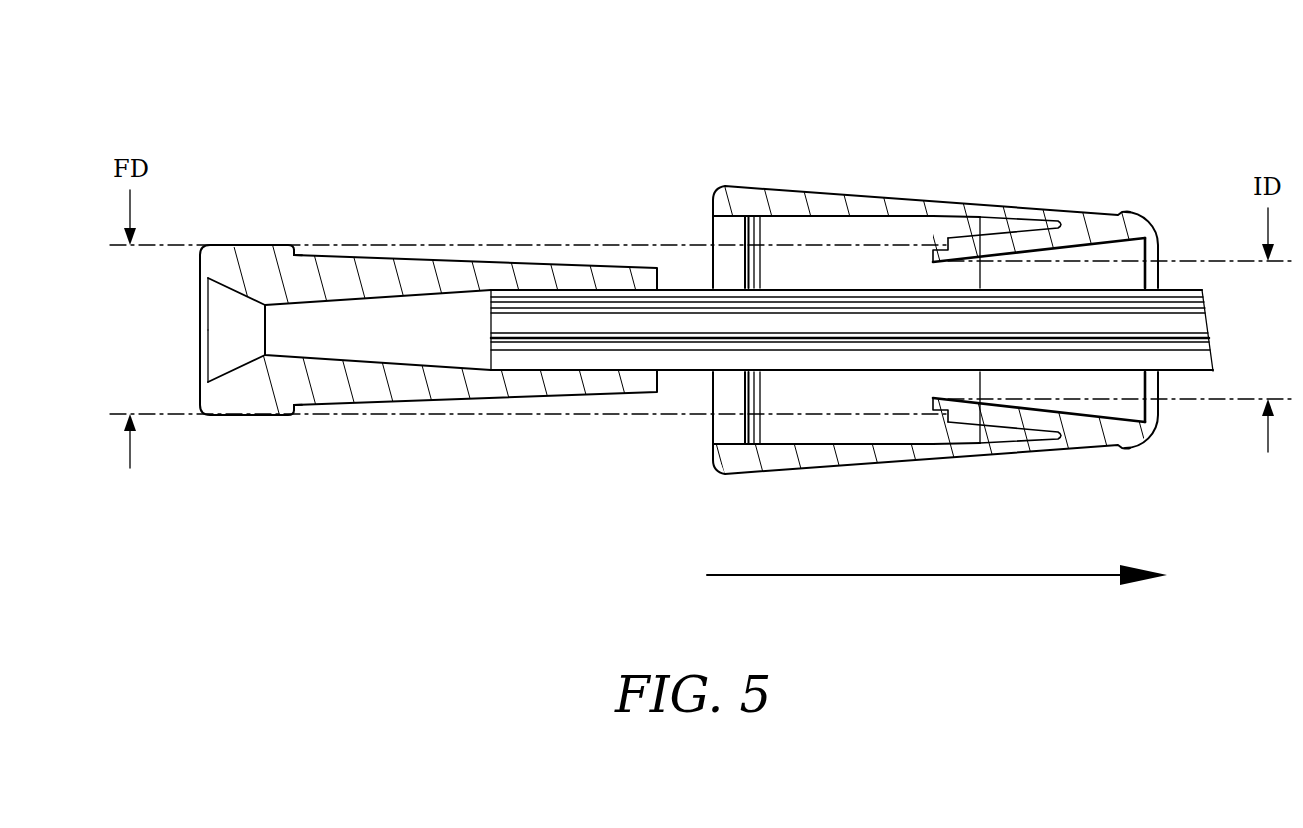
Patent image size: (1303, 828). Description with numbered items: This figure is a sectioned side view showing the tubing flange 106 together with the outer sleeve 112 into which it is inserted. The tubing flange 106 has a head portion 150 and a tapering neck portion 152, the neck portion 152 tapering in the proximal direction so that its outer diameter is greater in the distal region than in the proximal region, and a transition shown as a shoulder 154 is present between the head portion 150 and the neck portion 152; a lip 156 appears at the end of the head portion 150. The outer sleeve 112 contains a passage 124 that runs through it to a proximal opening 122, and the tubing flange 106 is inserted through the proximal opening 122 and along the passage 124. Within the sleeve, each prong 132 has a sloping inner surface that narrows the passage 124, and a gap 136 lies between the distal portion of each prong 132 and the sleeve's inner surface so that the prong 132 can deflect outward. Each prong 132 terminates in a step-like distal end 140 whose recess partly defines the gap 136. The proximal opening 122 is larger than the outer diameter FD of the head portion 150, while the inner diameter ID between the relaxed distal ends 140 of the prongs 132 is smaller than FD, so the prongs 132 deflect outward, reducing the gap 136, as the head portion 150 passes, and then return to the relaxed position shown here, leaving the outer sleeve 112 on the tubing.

The tubing flange 106 is at (732, 296).
The flange lip 156 is at (215, 245).
The head portion 150 is at (248, 400).
The shoulder 154 is at (298, 408).
The tapering neck portion 152 is at (410, 388).
The outer sleeve 112 is at (744, 296).
The passage 124 is at (822, 262).
The gap 136 is at (972, 222).
The distal end 140 is at (933, 250).
The prong 132 is at (1030, 235).
The proximal opening 122 is at (1157, 248).